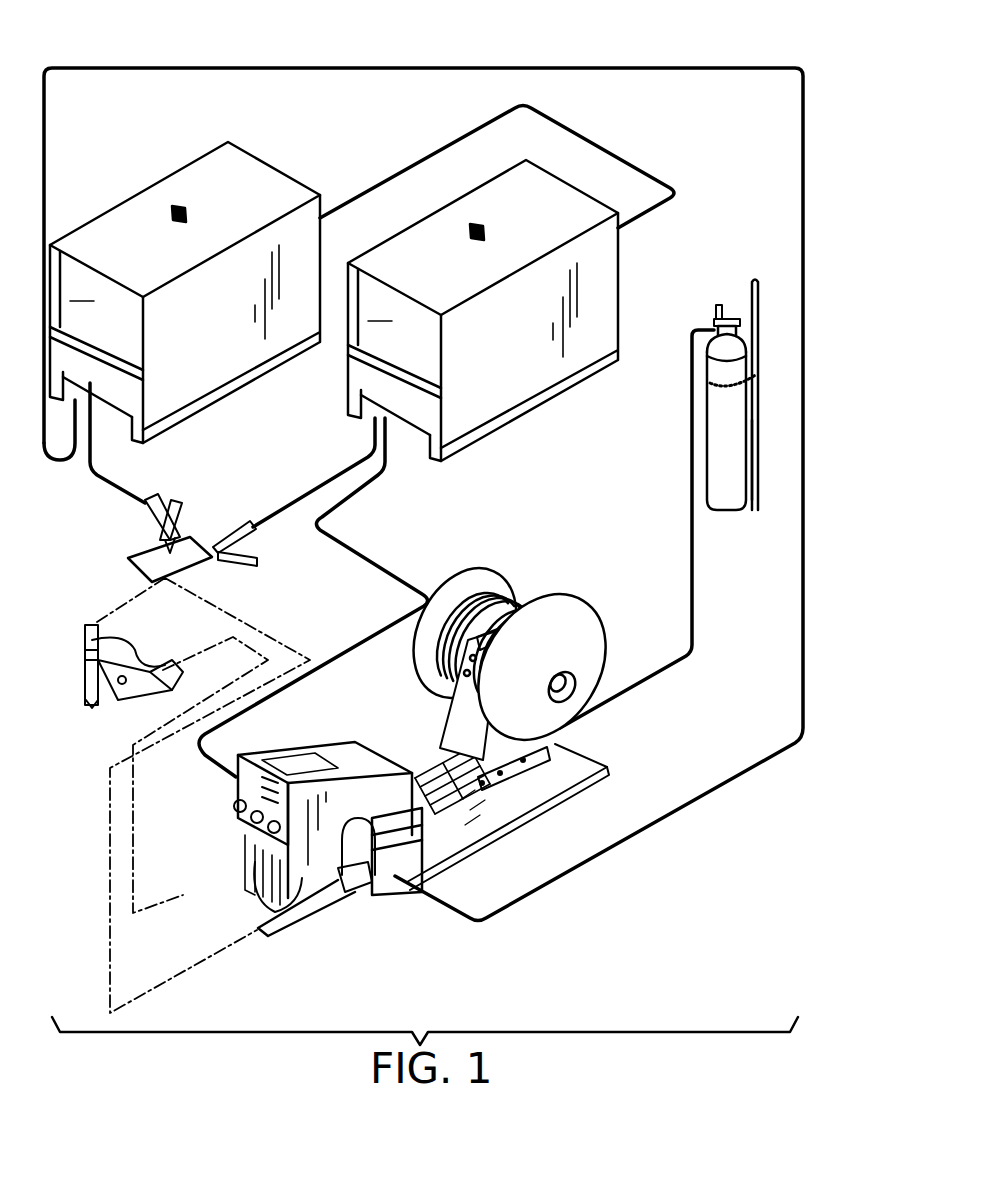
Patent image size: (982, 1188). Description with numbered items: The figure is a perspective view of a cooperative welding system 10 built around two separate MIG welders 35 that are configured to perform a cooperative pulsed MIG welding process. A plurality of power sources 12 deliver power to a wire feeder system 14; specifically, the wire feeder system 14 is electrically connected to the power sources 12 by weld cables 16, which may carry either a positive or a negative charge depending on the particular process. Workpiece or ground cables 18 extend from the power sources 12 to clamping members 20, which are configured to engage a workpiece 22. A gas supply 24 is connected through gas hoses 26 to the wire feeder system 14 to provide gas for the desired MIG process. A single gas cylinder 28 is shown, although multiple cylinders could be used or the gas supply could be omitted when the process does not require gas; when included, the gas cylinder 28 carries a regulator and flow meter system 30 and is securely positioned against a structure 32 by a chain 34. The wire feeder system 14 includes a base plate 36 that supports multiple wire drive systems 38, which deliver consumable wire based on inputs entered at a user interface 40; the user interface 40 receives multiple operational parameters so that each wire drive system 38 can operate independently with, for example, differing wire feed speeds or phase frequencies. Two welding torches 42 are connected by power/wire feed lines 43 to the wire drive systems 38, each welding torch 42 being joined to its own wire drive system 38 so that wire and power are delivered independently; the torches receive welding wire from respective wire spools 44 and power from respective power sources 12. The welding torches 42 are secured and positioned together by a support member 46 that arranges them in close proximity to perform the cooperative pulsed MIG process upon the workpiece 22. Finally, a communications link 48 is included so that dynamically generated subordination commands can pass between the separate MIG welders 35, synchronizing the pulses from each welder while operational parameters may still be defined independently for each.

The cooperative welding system 10 is at (716, 42).
The power source 12 is at (334, 301).
The wire feeder system 14 is at (640, 742).
The weld cable 16 is at (385, 66).
The workpiece or ground cable 18 is at (133, 490).
The clamping member 20 is at (183, 503).
The workpiece 22 is at (140, 555).
The gas supply 24 is at (757, 275).
The gas hose 26 is at (700, 656).
The gas cylinder 28 is at (703, 423).
The regulator and flow meter system 30 is at (700, 303).
The structure 32 is at (758, 418).
The chain 34 is at (752, 378).
The MIG welder 35 is at (300, 148).
The base plate 36 is at (503, 808).
The wire drive system 38 is at (318, 740).
The user interface 40 is at (230, 800).
The welding torch 42 is at (118, 648).
The power/wire feed line 43 is at (265, 935).
The wire spool 44 is at (465, 592).
The support member 46 is at (92, 705).
The communications link 48 is at (550, 115).